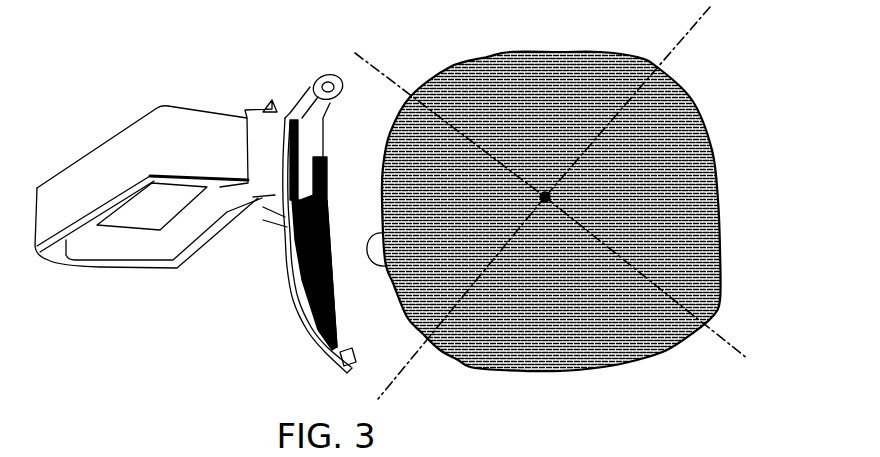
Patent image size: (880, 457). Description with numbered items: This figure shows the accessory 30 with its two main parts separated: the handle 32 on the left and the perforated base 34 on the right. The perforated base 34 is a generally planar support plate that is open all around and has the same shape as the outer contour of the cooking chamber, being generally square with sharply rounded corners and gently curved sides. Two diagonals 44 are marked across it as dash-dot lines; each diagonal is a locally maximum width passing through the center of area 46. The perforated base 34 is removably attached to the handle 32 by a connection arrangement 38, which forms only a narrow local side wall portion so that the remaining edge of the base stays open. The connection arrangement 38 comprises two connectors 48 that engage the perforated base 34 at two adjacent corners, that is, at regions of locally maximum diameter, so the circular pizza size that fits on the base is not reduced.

The accessory 30 is at (763, 133).
The handle 32 is at (100, 145).
The perforated base 34 is at (696, 112).
The connection arrangement 38 is at (245, 303).
The diagonals 44 is at (392, 84).
The center of area 46 is at (548, 197).
The connectors 48 is at (327, 75).